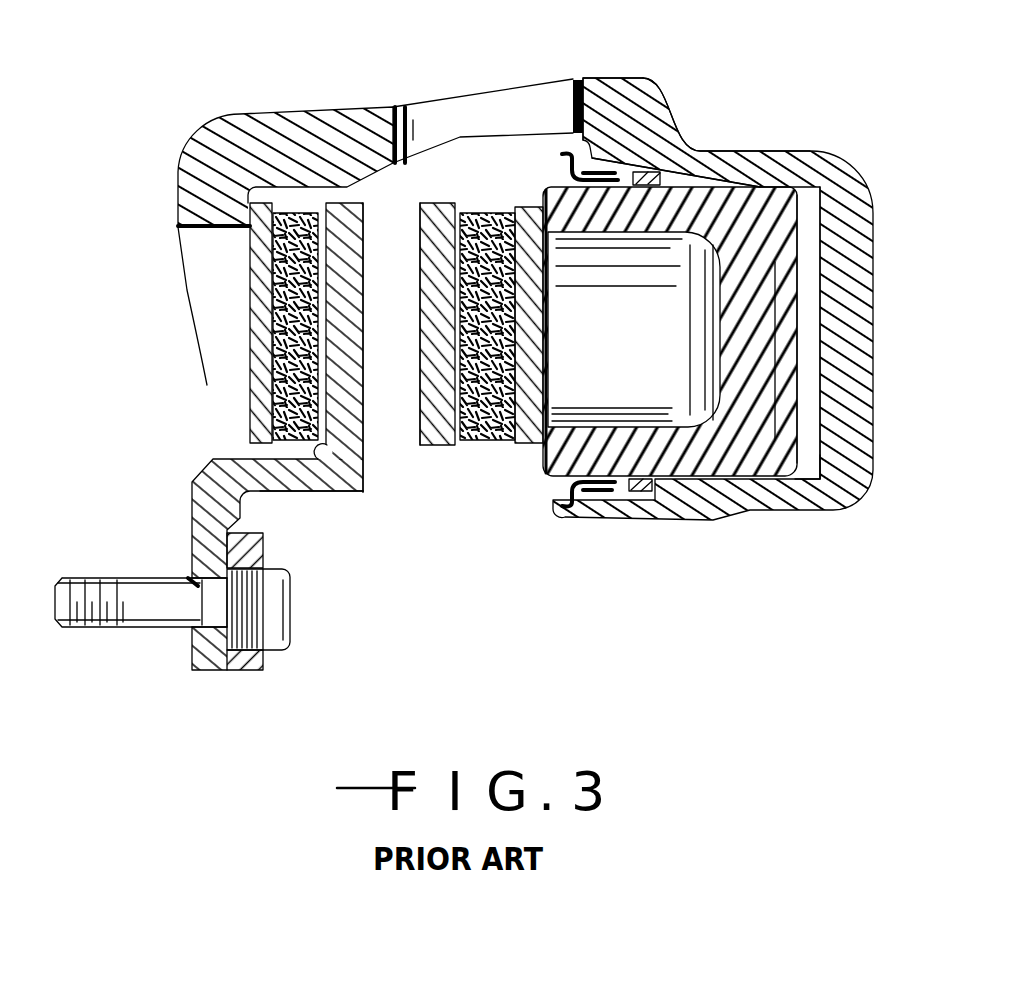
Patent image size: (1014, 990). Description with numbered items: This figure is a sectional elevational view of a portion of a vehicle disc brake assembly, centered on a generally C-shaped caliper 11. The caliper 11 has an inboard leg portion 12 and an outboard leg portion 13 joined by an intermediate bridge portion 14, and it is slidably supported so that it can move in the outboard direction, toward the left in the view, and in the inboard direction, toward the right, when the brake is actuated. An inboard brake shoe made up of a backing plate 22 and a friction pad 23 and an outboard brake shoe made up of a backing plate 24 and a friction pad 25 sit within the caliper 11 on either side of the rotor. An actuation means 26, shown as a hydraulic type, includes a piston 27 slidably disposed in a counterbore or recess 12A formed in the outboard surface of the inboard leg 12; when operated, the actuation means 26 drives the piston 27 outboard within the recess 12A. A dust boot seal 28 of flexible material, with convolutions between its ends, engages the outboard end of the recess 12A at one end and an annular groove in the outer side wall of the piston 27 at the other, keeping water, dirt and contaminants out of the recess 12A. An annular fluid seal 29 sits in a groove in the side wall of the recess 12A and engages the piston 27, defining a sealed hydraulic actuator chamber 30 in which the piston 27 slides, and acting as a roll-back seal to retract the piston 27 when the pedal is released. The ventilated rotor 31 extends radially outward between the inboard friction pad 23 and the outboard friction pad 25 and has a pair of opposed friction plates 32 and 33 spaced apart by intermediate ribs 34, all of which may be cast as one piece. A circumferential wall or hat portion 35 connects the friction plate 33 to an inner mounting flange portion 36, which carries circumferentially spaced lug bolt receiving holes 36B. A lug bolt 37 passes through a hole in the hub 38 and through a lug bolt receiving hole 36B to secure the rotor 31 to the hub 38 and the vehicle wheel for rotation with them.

The caliper 11 is at (480, 80).
The inboard leg portion 12 is at (857, 200).
The recess 12A is at (812, 468).
The outboard leg portion 13 is at (197, 193).
The intermediate bridge portion 14 is at (637, 110).
The backing plate 22 is at (533, 207).
The friction pad 23 is at (514, 472).
The backing plate 24 is at (262, 397).
The friction pad 25 is at (285, 443).
The actuation means 26 is at (720, 137).
The piston 27 is at (607, 443).
The dust boot seal 28 is at (575, 483).
The fluid seal 29 is at (647, 492).
The hydraulic actuator chamber 30 is at (807, 320).
The rotor 31 is at (188, 500).
The friction plate 32 is at (440, 447).
The friction plate 33 is at (318, 462).
The intermediate ribs 34 is at (387, 430).
The hat portion 35 is at (273, 492).
The inner mounting flange portion 36 is at (207, 523).
The lug bolt receiving holes 36B is at (182, 578).
The lug bolt 37 is at (147, 630).
The hub 38 is at (290, 599).